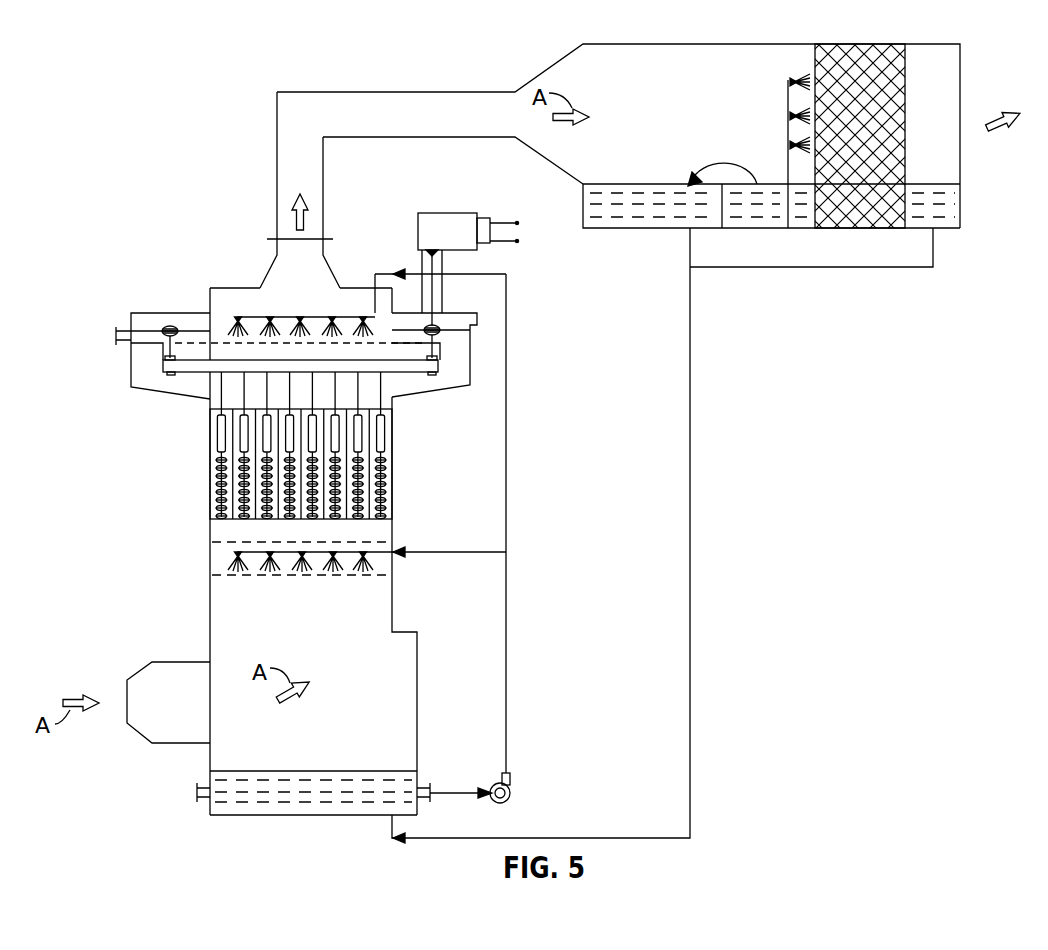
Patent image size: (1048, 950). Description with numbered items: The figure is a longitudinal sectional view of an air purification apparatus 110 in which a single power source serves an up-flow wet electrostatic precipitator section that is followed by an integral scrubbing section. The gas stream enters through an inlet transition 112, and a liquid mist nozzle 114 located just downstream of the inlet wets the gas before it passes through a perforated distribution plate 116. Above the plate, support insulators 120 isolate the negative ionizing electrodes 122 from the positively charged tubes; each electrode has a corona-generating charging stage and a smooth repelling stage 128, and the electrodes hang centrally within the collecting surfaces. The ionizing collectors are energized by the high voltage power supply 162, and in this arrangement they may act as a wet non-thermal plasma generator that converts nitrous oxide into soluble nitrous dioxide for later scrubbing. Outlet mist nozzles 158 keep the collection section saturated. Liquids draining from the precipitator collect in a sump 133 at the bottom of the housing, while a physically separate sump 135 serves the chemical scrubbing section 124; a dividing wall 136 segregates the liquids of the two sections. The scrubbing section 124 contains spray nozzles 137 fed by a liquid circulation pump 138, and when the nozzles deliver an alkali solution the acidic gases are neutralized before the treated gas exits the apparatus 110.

The apparatus 110 is at (230, 68).
The inlet transition 112 is at (127, 690).
The liquid mist nozzle 114 is at (233, 567).
The perforated distribution plate 116 is at (221, 343).
The support insulators 120 is at (442, 332).
The ionizing electrodes 122 is at (384, 460).
The chemical scrubbing section 124 is at (848, 44).
The smooth repelling stage 128 is at (338, 445).
The sump 133 is at (288, 797).
The sump 135 is at (655, 220).
The dividing wall 136 is at (728, 223).
The spray nozzles 137 is at (788, 100).
The liquid circulation pump 138 is at (512, 793).
The outlet mist nozzles 158 is at (323, 313).
The high voltage power supply 162 is at (447, 213).